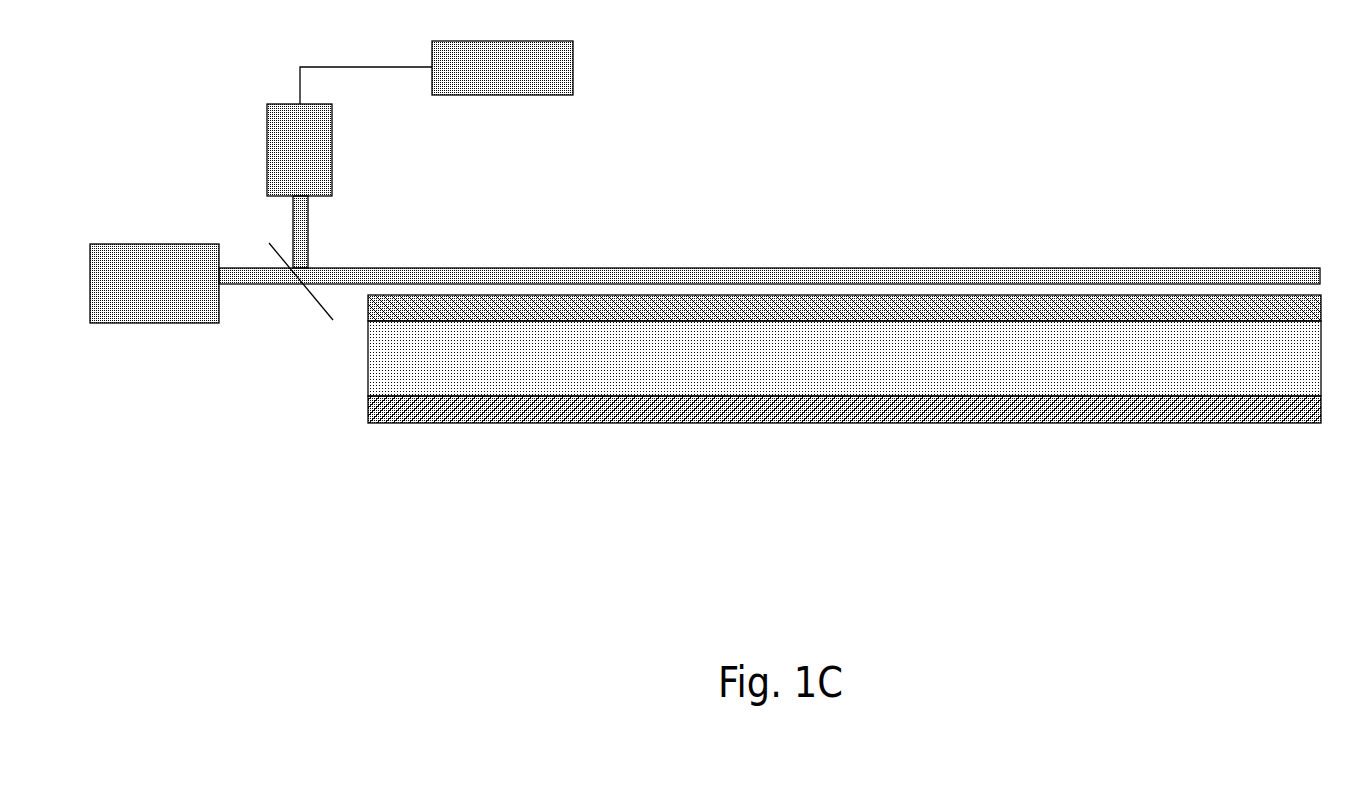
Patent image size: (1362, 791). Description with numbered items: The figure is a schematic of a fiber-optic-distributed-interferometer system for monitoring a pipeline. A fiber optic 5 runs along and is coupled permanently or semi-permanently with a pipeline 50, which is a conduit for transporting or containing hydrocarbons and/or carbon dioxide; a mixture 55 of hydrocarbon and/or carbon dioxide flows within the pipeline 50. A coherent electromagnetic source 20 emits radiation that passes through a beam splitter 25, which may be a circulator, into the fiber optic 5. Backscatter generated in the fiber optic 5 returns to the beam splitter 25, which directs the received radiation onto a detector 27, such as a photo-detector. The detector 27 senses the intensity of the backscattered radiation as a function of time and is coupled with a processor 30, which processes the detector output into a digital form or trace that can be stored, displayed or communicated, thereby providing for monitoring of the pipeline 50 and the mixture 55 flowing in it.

The fiber optic 5 is at (785, 268).
The coherent electromagnetic source 20 is at (140, 323).
The beam splitter 25 is at (302, 295).
The detector 27 is at (333, 155).
The processor 30 is at (573, 65).
The pipeline 50 is at (605, 423).
The mixture 55 is at (776, 370).